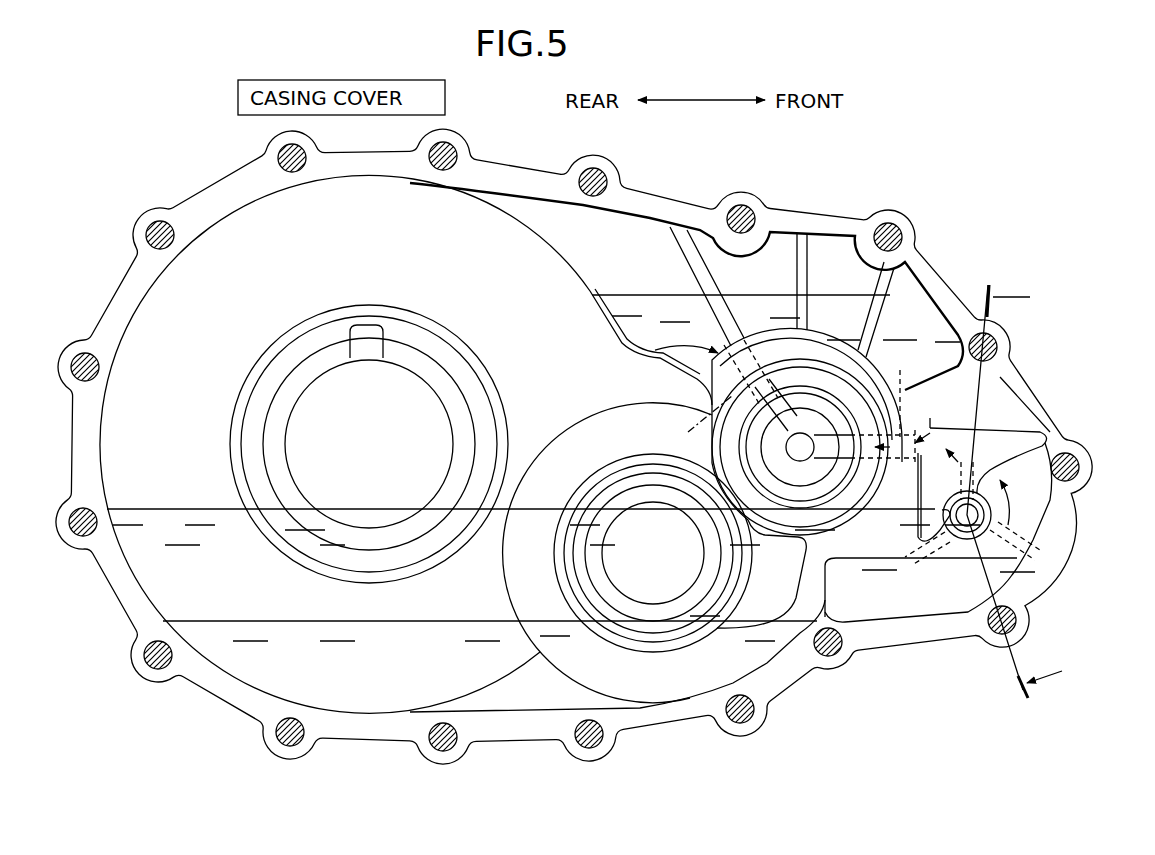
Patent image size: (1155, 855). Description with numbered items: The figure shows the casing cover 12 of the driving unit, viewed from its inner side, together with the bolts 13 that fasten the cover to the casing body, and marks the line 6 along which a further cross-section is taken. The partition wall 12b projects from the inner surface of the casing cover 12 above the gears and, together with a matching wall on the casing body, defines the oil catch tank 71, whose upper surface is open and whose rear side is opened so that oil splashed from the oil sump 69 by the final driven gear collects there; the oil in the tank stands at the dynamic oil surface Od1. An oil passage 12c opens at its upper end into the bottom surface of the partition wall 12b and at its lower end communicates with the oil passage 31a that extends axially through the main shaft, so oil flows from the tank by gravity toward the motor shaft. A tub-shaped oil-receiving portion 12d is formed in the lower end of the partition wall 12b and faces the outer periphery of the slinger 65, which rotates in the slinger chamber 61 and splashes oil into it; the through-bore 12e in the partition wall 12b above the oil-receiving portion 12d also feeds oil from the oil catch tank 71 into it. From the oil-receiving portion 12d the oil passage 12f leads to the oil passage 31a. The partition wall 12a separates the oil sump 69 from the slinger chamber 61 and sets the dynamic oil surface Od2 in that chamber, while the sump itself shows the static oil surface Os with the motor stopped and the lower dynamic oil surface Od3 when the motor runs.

The casing cover 12 is at (942, 274).
The bolts 13 is at (145, 236).
The oil catch tank 71 is at (730, 342).
The oil passage 31a is at (800, 462).
The slinger chamber 61 is at (960, 540).
The slinger 65 is at (1040, 550).
The oil sump 69 is at (420, 709).
The partition wall 12a is at (833, 585).
The partition wall 12b is at (648, 360).
The oil passage 12c is at (711, 392).
The oil-receiving portion 12d is at (1030, 487).
The through-bore 12e is at (932, 425).
The oil passage 12f is at (890, 403).
The dynamic oil surface Od1 is at (662, 293).
The dynamic oil surface Od2 is at (843, 552).
The dynamic oil surface Od3 is at (250, 619).
The static oil surface Os is at (210, 507).
The section line VI-VI 6 is at (1017, 489).